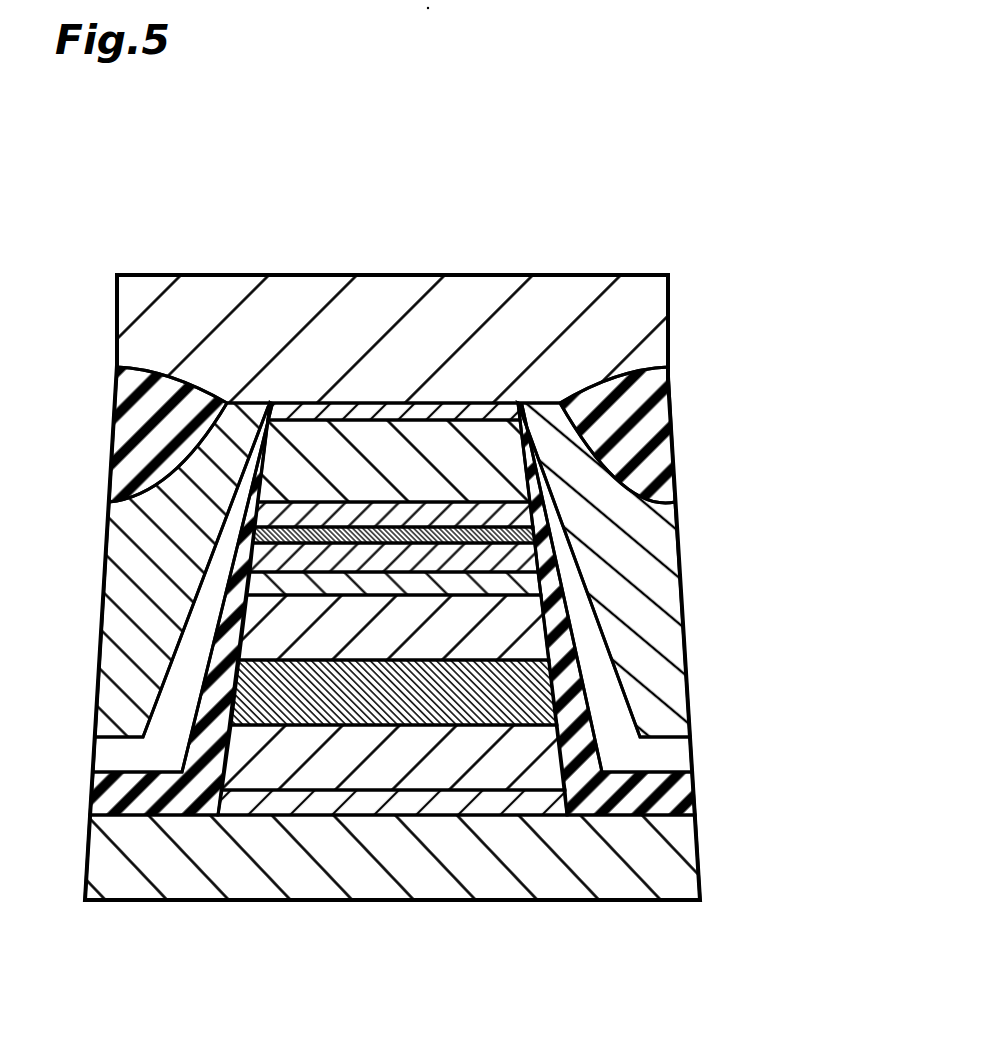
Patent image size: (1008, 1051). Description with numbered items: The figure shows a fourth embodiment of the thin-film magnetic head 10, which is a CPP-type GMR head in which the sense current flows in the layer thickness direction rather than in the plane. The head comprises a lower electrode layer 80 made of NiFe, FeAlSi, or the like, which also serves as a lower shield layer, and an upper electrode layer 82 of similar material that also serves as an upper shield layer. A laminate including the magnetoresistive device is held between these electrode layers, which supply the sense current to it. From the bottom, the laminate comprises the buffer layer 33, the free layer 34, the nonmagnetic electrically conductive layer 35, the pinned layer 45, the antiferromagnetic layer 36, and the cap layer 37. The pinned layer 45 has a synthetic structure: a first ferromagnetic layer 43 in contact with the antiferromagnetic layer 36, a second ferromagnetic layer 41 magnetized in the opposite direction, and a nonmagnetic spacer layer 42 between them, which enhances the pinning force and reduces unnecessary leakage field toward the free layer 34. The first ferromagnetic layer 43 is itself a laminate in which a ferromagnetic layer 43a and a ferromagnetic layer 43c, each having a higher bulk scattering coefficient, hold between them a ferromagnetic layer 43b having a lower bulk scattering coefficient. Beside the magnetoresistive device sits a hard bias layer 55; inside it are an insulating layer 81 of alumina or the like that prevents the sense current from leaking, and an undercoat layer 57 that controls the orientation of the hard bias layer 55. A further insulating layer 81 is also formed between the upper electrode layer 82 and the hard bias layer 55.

The thin-film magnetic head 10 is at (714, 240).
The buffer layer 33 is at (552, 803).
The free layer 34 is at (552, 757).
The nonmagnetic electrically conductive layer 35 is at (560, 693).
The antiferromagnetic layer 36 is at (540, 460).
The cap layer 37 is at (575, 415).
The second ferromagnetic layer 41 is at (555, 630).
The nonmagnetic spacer layer 42 is at (550, 580).
The first ferromagnetic layer 43 is at (552, 541).
The ferromagnetic layer (second layer) 43a is at (548, 552).
The ferromagnetic layer (first layer) 43b is at (545, 533).
The ferromagnetic layer (third layer) 43c is at (545, 500).
The pinned layer 45 is at (577, 577).
The hard bias layer 55 is at (125, 600).
The undercoat layer 57 is at (190, 676).
The lower electrode layer 80 is at (686, 862).
The insulating layer 81 is at (124, 436).
The upper electrode layer 82 is at (127, 324).